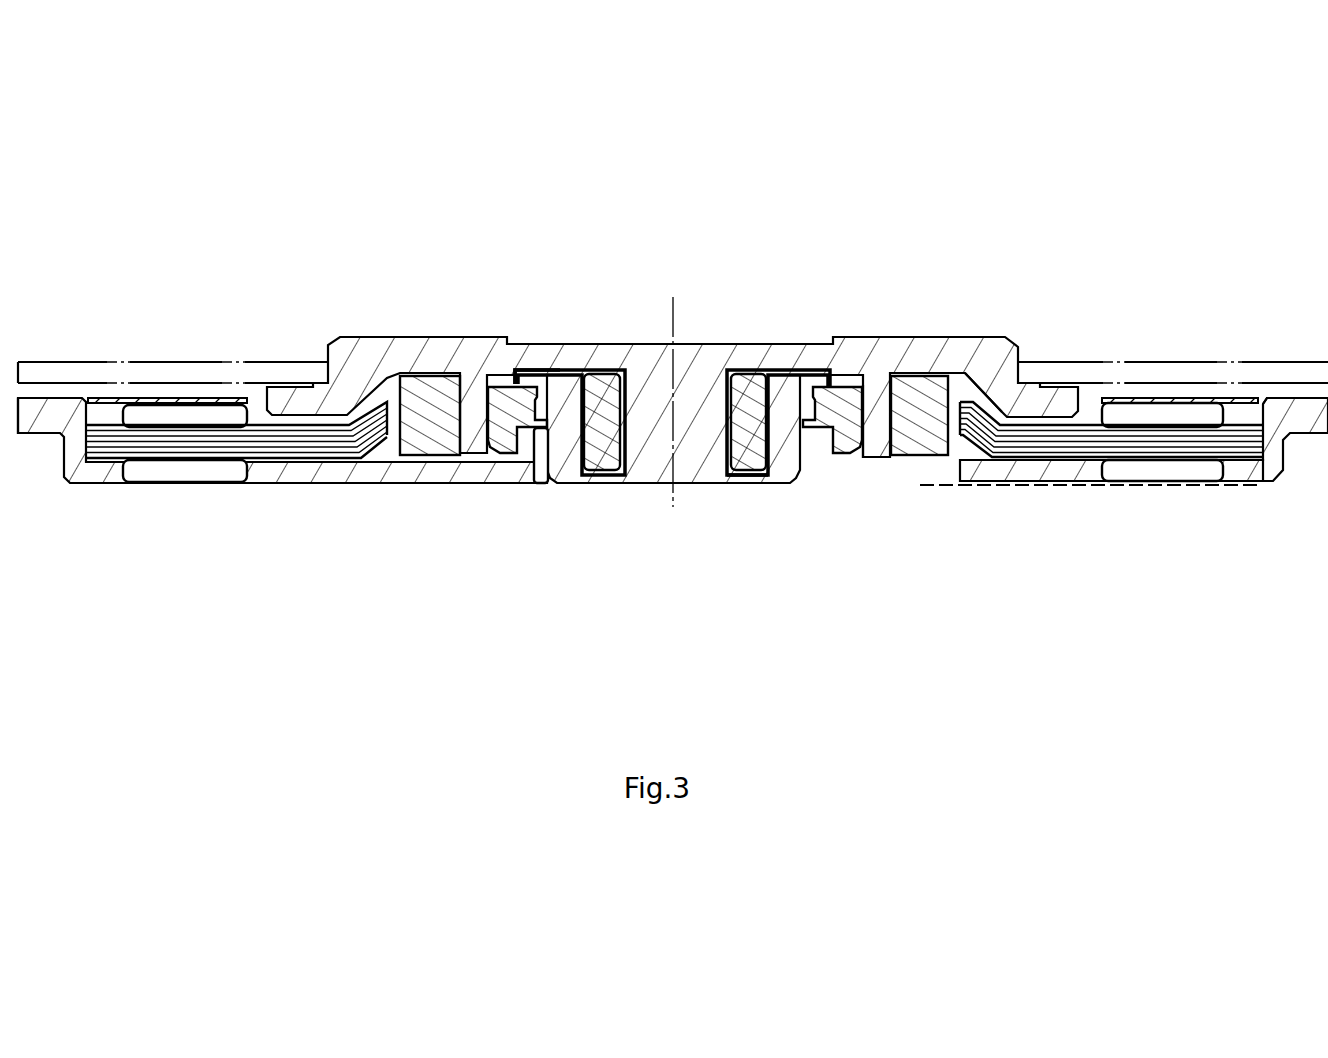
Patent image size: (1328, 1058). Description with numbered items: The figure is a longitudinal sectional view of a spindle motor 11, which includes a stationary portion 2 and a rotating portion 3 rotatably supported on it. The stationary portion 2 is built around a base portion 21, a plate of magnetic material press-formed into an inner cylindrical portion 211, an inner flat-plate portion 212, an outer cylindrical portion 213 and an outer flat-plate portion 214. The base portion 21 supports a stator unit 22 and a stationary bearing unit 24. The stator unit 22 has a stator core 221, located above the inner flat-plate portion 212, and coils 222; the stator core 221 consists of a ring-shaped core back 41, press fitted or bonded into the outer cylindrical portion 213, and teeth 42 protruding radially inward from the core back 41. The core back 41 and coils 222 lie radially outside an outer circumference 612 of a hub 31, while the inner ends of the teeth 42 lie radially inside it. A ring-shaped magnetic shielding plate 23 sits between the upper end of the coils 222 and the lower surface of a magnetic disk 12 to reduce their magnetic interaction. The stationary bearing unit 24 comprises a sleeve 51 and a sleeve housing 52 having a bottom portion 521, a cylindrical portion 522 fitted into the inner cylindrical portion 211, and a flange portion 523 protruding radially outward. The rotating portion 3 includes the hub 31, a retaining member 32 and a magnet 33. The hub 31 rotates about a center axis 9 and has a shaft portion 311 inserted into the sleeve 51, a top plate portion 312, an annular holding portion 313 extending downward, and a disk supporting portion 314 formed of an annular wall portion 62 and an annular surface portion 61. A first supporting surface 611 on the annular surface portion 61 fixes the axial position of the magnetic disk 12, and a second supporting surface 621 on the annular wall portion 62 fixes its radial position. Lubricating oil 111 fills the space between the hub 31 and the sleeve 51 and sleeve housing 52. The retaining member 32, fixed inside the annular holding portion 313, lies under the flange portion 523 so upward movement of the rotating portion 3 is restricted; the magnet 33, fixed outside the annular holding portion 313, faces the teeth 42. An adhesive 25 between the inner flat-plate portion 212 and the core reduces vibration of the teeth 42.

The spindle motor 11 is at (403, 277).
The lubricating oil 111 is at (530, 368).
The magnetic disk 12 is at (1185, 375).
The stationary portion 2 is at (566, 515).
The base portion 21 is at (108, 597).
The inner cylindrical portion 211 is at (535, 470).
The inner flat-plate portion 212 is at (318, 478).
The outer cylindrical portion 213 is at (72, 447).
The outer flat-plate portion 214 is at (32, 440).
The stator unit 22 is at (1070, 647).
The stator core 221 is at (1140, 604).
The coils 222 is at (1125, 470).
The magnetic shielding plate 23 is at (1232, 392).
The stationary bearing unit 24 is at (640, 609).
The adhesive 25 is at (1087, 487).
The rotating portion 3 is at (555, 320).
The hub 31 is at (695, 208).
The shaft portion 311 is at (702, 405).
The top plate portion 312 is at (803, 353).
The annular holding portion 313 is at (877, 410).
The disk supporting portion 314 is at (978, 252).
The retaining member 32 is at (870, 430).
The magnet 33 is at (915, 430).
The core back 41 is at (1232, 455).
The teeth 42 is at (1168, 440).
The sleeve 51 is at (602, 455).
The sleeve housing 52 is at (700, 564).
The bottom portion 521 is at (715, 483).
The cylindrical portion 522 is at (790, 435).
The flange portion 523 is at (815, 440).
The annular surface portion 61 is at (1040, 410).
The first supporting surface 611 is at (1055, 397).
The outer circumference 612 is at (1083, 392).
The annular wall portion 62 is at (988, 375).
The second supporting surface 621 is at (1015, 385).
The center axis 9 is at (672, 313).